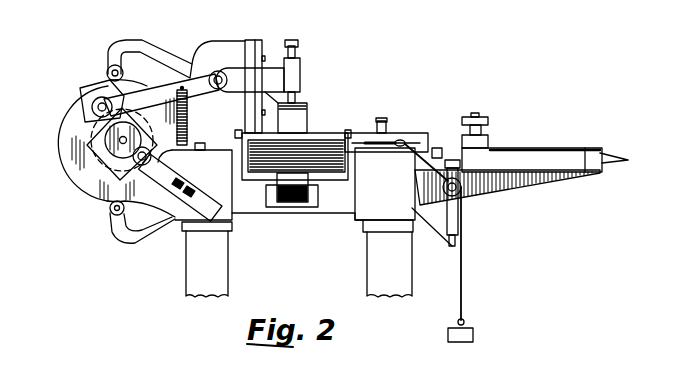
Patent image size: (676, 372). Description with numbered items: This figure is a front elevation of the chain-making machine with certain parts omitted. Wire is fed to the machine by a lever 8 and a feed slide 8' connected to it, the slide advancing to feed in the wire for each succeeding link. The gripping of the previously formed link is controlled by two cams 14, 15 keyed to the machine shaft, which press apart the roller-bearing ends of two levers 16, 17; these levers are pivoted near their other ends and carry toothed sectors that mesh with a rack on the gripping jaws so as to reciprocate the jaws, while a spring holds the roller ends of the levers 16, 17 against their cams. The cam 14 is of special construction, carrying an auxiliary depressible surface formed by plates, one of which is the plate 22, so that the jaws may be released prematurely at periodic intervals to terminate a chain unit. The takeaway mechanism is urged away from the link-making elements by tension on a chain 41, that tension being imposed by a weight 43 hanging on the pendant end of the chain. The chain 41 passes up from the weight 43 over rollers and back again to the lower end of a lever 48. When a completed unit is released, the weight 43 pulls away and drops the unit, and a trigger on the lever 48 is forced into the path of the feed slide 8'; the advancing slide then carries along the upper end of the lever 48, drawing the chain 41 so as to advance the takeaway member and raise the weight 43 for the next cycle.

The lever 8 is at (461, 122).
The feed slide 8' is at (545, 142).
The cam 14 is at (143, 84).
The cam 15 is at (80, 180).
The lever 16 is at (151, 48).
The lever 17 is at (150, 233).
The plate 22 is at (83, 100).
The chain 41 is at (463, 262).
The weight 43 is at (474, 331).
The lever 48 is at (459, 216).